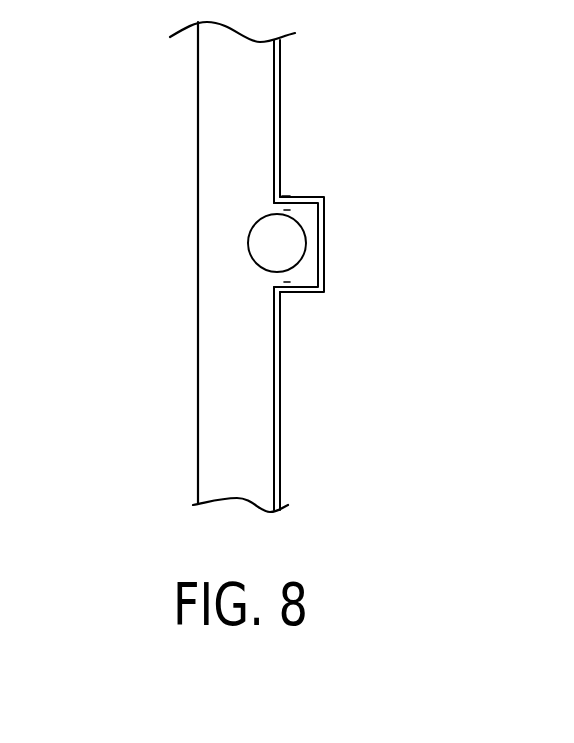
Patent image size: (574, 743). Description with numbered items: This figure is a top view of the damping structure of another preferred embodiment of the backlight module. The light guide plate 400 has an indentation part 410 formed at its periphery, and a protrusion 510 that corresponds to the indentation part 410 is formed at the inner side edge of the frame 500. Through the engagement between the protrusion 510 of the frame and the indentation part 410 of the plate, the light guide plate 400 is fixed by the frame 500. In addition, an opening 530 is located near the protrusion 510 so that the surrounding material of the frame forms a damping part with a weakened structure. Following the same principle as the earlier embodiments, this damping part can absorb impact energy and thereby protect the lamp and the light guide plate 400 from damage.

The light guide plate 400 is at (325, 135).
The indentation part 410 is at (324, 245).
The frame 500 is at (215, 103).
The protrusion 510 is at (290, 196).
The opening 530 is at (248, 252).